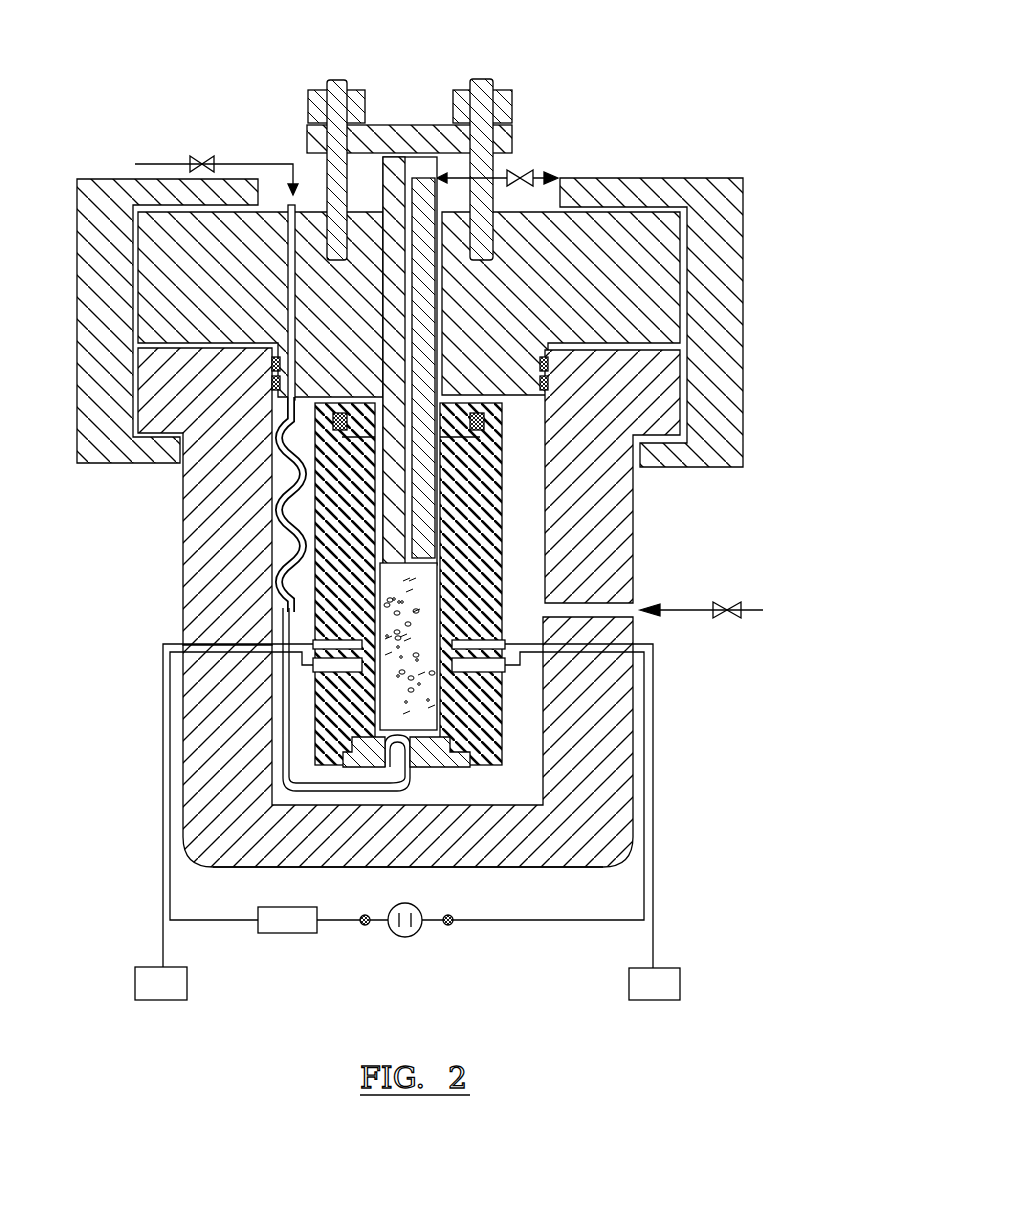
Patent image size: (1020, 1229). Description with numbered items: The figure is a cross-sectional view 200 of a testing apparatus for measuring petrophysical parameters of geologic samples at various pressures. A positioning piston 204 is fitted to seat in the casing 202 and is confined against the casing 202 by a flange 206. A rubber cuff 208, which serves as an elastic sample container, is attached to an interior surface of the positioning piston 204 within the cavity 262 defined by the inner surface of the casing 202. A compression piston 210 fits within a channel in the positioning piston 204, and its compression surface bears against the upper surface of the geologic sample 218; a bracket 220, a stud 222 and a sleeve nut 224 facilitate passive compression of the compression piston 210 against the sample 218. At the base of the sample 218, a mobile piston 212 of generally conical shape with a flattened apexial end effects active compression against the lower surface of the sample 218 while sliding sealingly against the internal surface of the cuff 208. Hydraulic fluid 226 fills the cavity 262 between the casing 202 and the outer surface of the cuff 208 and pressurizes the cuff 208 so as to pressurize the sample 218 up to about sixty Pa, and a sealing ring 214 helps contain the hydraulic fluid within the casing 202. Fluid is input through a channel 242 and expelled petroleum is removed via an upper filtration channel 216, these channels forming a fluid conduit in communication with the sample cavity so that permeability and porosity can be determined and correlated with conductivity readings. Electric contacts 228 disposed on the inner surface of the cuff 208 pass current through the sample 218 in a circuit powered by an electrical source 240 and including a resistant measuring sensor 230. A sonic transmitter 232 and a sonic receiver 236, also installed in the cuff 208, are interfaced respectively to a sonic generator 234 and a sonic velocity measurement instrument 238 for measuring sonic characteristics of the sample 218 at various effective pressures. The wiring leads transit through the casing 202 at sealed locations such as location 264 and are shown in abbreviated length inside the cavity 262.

The cross-sectional view 200 is at (545, 68).
The casing 202 is at (603, 805).
The positioning piston 204 is at (658, 252).
The flange 206 is at (720, 278).
The rubber cuff 208 is at (277, 563).
The compression piston 210 is at (427, 300).
The mobile piston 212 is at (438, 750).
The sealing ring 214 is at (548, 386).
The upper filtration channel 216 is at (445, 550).
The geologic sample 218 is at (440, 617).
The bracket 220 is at (298, 138).
The stud 222 is at (323, 187).
The sleeve nut 224 is at (320, 103).
The hydraulic fluid 226 is at (607, 610).
The electric contacts 228 is at (367, 673).
The resistant measuring sensor 230 is at (290, 933).
The sonic transmitter 232 is at (452, 652).
The sonic generator 234 is at (682, 985).
The sonic receiver 236 is at (313, 667).
The sonic velocity measurement instrument 238 is at (190, 985).
The electrical source 240 is at (410, 938).
The channel 242 is at (290, 525).
The cavity 262 is at (588, 867).
The sealed location 264 is at (190, 638).